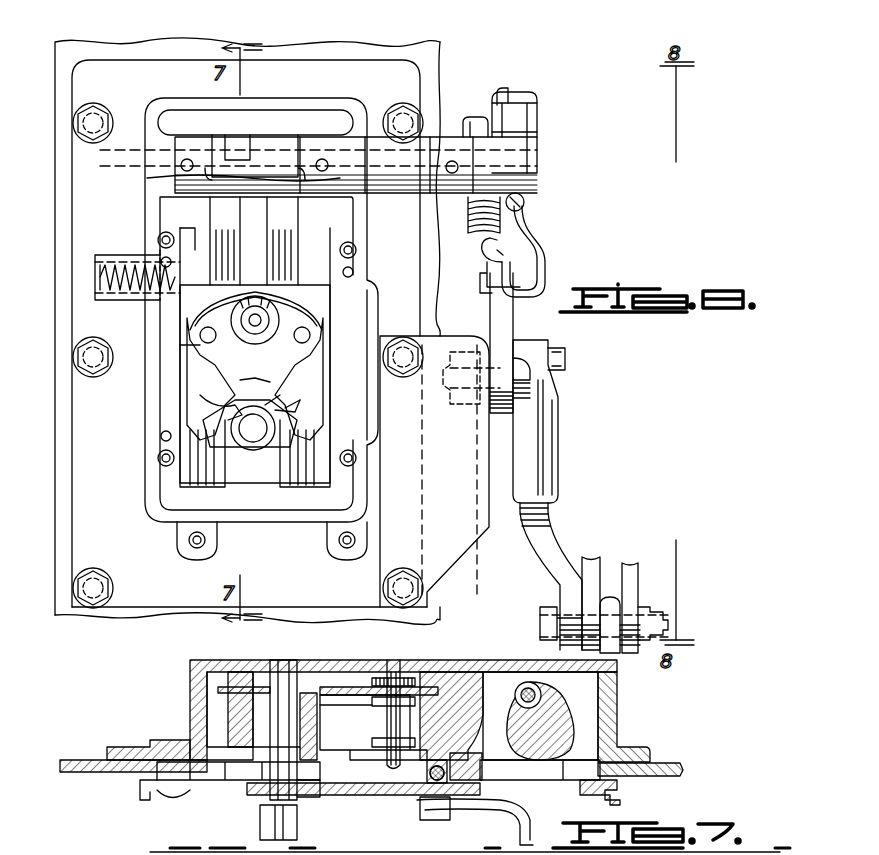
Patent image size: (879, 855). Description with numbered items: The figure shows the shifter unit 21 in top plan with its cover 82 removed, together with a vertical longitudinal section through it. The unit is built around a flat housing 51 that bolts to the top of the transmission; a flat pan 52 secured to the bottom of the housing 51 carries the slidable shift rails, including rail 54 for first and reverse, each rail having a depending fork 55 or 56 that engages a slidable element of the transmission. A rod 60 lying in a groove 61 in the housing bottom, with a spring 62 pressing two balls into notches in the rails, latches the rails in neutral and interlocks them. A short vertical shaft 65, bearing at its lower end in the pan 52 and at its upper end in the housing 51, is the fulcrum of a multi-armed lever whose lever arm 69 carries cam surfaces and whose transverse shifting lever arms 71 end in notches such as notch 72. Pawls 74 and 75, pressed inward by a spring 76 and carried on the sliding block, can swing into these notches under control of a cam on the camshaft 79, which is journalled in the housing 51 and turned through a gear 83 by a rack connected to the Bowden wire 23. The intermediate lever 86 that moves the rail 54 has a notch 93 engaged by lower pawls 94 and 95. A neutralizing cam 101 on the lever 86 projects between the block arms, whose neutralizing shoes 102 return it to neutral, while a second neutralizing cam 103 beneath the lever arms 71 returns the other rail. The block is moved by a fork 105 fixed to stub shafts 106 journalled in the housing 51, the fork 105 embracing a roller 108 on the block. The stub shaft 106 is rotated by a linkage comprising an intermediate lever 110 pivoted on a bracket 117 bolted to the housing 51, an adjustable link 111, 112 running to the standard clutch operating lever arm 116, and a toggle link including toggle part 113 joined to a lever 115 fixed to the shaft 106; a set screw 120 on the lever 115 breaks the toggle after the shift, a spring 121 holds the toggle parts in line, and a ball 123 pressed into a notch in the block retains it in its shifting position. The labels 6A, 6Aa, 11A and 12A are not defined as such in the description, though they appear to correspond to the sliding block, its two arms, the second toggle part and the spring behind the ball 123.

In FIG. 6, the latch housing 6A is at (195, 235).
In FIG. 7, the latch housing 6A is at (435, 700).
In FIG. 6, the housing wall 6Aa is at (200, 346).
In FIG. 7, the housing wall 6Aa is at (350, 710).
In FIG. 6, the lever arm 11A is at (533, 242).
In FIG. 6, the spring 12A is at (150, 270).
In FIG. 6, the shifter unit 21 is at (147, 182).
In FIG. 7, the Bowden wire 23 is at (85, 854).
In FIG. 6, the flat housing 51 is at (147, 205).
In FIG. 7, the flat housing 51 is at (612, 740).
In FIG. 7, the flat pan 52 is at (625, 797).
In FIG. 7, the shift rail 54 is at (200, 775).
In FIG. 7, the fork 55 is at (283, 819).
In FIG. 7, the fork 56 is at (498, 805).
In FIG. 7, the rod 60 is at (437, 785).
In FIG. 7, the groove 61 is at (445, 800).
In FIG. 7, the spring 62 is at (420, 797).
In FIG. 6, the short vertical shaft 65 is at (250, 447).
In FIG. 7, the short vertical shaft 65 is at (290, 660).
In FIG. 7, the lever arm 69 is at (265, 780).
In FIG. 6, the shifting lever arms 71 is at (200, 445).
In FIG. 6, the notch 72 is at (222, 400).
In FIG. 6, the pawl 74 is at (200, 372).
In FIG. 7, the pawl 74 is at (393, 688).
In FIG. 6, the pawl 75 is at (300, 355).
In FIG. 6, the spring 76 is at (200, 322).
In FIG. 6, the camshaft 79 is at (257, 318).
In FIG. 7, the camshaft 79 is at (392, 700).
In FIG. 7, the cover 82 is at (195, 680).
In FIG. 6, the gear 83 is at (250, 300).
In FIG. 7, the gear 83 is at (440, 672).
In FIG. 6, the intermediate lever 86 is at (295, 425).
In FIG. 7, the intermediate lever 86 is at (225, 780).
In FIG. 6, the notch 93 is at (400, 348).
In FIG. 7, the pawl 94 is at (365, 775).
In FIG. 6, the pawl 95 is at (310, 365).
In FIG. 6, the neutralizing cam 101 is at (254, 372).
In FIG. 7, the neutralizing cam 101 is at (350, 760).
In FIG. 6, the neutralizing shoes 102 is at (340, 545).
In FIG. 7, the neutralizing shoes 102 is at (268, 713).
In FIG. 7, the second neutralizing cam 103 is at (305, 700).
In FIG. 6, the fork 105 is at (255, 142).
In FIG. 7, the fork 105 is at (580, 690).
In FIG. 6, the stub shafts 106 is at (446, 170).
In FIG. 6, the roller 108 is at (235, 162).
In FIG. 7, the roller 108 is at (580, 710).
In FIG. 6, the intermediate lever 110 is at (512, 335).
In FIG. 6, the adjustable link 111 is at (548, 455).
In FIG. 6, the adjustable link 112 is at (556, 552).
In FIG. 6, the toggle part 113 is at (530, 108).
In FIG. 6, the lever 115 is at (513, 145).
In FIG. 6, the clutch operating lever arm 116 is at (612, 645).
In FIG. 6, the bracket 117 is at (466, 575).
In FIG. 6, the set screw 120 is at (522, 200).
In FIG. 6, the spring 121 is at (500, 218).
In FIG. 6, the ball 123 is at (160, 255).